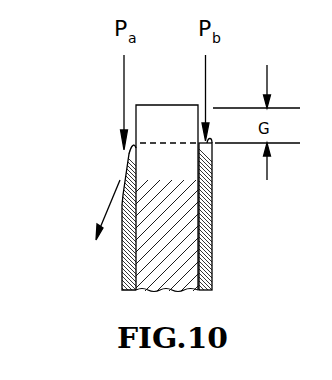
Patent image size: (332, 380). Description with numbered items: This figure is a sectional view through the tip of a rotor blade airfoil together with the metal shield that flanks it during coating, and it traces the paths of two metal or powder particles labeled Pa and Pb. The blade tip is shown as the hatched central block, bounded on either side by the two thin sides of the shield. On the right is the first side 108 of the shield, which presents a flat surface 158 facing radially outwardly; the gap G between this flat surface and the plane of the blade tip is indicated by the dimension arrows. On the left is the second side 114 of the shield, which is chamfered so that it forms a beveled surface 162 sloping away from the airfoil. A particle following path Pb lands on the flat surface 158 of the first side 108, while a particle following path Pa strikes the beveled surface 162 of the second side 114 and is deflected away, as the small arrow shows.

The first side of the shield 108 is at (212, 273).
The second side of the shield 114 is at (122, 279).
The flat surface 158 is at (209, 139).
The beveled surface 162 is at (128, 168).